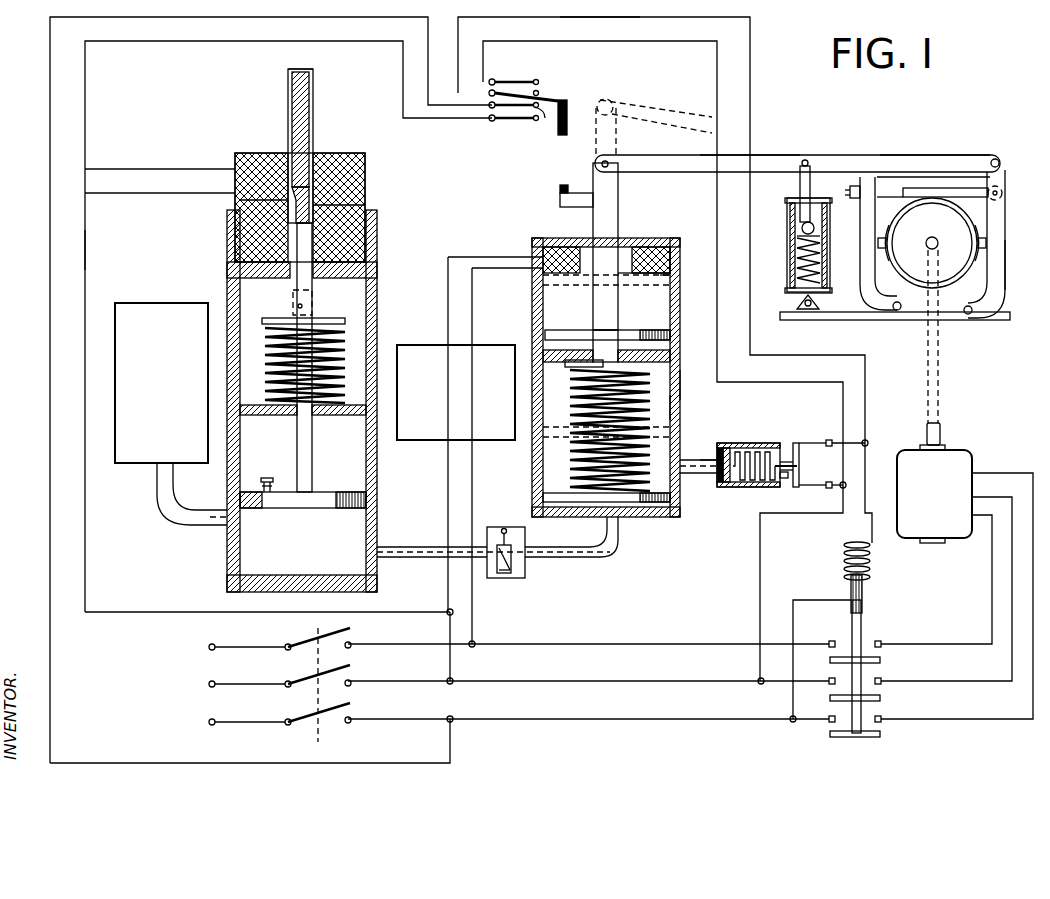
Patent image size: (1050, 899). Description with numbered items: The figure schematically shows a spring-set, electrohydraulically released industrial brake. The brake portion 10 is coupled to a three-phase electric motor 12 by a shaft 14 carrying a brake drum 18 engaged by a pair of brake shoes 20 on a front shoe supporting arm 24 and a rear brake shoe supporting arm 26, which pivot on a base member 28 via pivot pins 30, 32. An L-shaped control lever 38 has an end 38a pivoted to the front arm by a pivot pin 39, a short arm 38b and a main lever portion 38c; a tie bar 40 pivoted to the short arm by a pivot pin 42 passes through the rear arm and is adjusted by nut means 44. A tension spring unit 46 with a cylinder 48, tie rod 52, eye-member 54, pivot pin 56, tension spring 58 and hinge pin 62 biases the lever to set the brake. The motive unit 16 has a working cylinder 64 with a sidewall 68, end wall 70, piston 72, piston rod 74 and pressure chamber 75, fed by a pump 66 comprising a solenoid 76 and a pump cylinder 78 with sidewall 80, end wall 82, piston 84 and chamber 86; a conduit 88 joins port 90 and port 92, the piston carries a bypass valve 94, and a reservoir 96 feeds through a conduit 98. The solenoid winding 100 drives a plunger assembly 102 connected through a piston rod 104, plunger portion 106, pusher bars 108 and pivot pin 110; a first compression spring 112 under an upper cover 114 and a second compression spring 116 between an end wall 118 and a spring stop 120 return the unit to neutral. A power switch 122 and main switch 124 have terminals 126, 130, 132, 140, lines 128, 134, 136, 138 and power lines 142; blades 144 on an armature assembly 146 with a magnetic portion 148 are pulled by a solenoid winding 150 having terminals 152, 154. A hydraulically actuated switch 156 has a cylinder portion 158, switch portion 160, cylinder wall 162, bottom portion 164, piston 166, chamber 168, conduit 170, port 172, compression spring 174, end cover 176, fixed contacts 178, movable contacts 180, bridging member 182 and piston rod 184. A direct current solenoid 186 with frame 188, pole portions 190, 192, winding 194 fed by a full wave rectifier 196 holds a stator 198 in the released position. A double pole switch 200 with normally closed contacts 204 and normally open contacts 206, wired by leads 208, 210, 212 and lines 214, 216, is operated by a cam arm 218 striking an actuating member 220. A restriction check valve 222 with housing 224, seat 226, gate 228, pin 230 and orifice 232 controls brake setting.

The brake portion 10 is at (860, 128).
The three-phase electric motor 12 is at (953, 527).
The shaft 14 is at (942, 432).
The electrofluid motive unit 16 is at (462, 161).
The brake drum 18 is at (940, 265).
The brake shoes 20 is at (975, 228).
The front shoe supporting arm 24 is at (1006, 272).
The rear brake shoe supporting arm 26 is at (861, 258).
The base member 28 is at (1008, 315).
The pivot pin 30 is at (968, 321).
The pivot pin 32 is at (900, 321).
The main control rod member or lever 38 is at (690, 156).
The end of main lever 38a is at (978, 155).
The short arm 38b is at (1001, 207).
The main lever portion 38c is at (768, 155).
The pivot pin 39 is at (998, 157).
The tie bar 40 is at (928, 188).
The pivot pin 42 is at (1002, 190).
The nut means 44 is at (852, 186).
The tension spring unit 46 is at (785, 274).
The cylinder 48 is at (788, 290).
The tie rod 52 is at (800, 185).
The eye-member 54 is at (802, 228).
The pivot pin 56 is at (806, 158).
The tension spring 58 is at (795, 250).
The hinge pin 62 is at (797, 305).
The working fluid cylinder 64 is at (682, 384).
The electrically operated fluid pump 66 is at (233, 157).
The cylindrical sidewall 68 is at (681, 405).
The end wall 70 is at (644, 518).
The piston 72 is at (650, 493).
The piston rod 74 is at (619, 200).
The expandable pressure chamber 75 is at (648, 517).
The electrical solenoid 76 is at (226, 200).
The pump cylinder 78 is at (225, 548).
The cylindrical sidewall 80 is at (232, 562).
The end wall 82 is at (285, 592).
The piston 84 is at (318, 512).
The expandable hydraulic chamber 86 is at (327, 551).
The conduit 88 is at (597, 557).
The port 90 is at (369, 552).
The port 92 is at (612, 527).
The check or bypass valve 94 is at (274, 485).
The fluid reservoir 96 is at (155, 303).
The conduit 98 is at (157, 490).
The alternating current winding 100 is at (272, 153).
The plunger assembly 102 is at (286, 96).
The piston rod 104 is at (297, 432).
The plunger portion 106 is at (295, 69).
The pusher bars 108 is at (265, 200).
The pivot pin 110 is at (292, 303).
The first compression spring 112 is at (673, 358).
The upper cover 114 is at (673, 335).
The second compression spring 116 is at (268, 372).
The upper cover or end wall 118 is at (258, 398).
The spring stop 120 is at (303, 341).
The power switch 122 is at (864, 638).
The main control switch 124 is at (318, 730).
The first set of terminals 126 is at (881, 645).
The lines 128 is at (950, 644).
The second set of terminals 130 is at (830, 640).
The terminals 132 is at (351, 648).
The line 134 is at (580, 646).
The line 136 is at (580, 683).
The line 138 is at (583, 721).
The second set of terminals 140 is at (288, 640).
The three-phase alternating current power lines 142 is at (220, 640).
The switch blades 144 is at (880, 660).
The armature assembly 146 is at (862, 622).
The magnetically attractive portion 148 is at (862, 605).
The solenoid winding 150 is at (845, 552).
The first terminal 152 is at (793, 722).
The second terminal 154 is at (868, 443).
The hydraulically actuated switch 156 is at (742, 490).
The hydraulic cylinder portion 158 is at (742, 444).
The switch portion 160 is at (815, 441).
The cylinder wall 162 is at (742, 443).
The bottom portion 164 is at (717, 455).
The piston 166 is at (725, 488).
The expandable chamber 168 is at (721, 485).
The conduit 170 is at (713, 474).
The port 172 is at (665, 493).
The compression spring 174 is at (778, 460).
The end cover 176 is at (789, 475).
The fixed contacts 178 is at (832, 443).
The movable contacts 180 is at (802, 440).
The bridging member 182 is at (800, 455).
The piston rod 184 is at (784, 462).
The direct current solenoid 186 is at (660, 237).
The annular frame 188 is at (678, 247).
The pole portion 190 is at (672, 275).
The pole portion 192 is at (630, 282).
The ring-shaped winding 194 is at (675, 262).
The full wave rectifier 196 is at (430, 345).
The stator 198 is at (575, 330).
The double pole switch 200 is at (566, 95).
The normally closed contacts 204 is at (537, 118).
The normally open contacts 206 is at (538, 82).
The lead 208 is at (51, 272).
The lead 210 is at (85, 250).
The lead 212 is at (220, 41).
The line 214 is at (518, 41).
The line 216 is at (588, 17).
The cam arm 218 is at (562, 185).
The switch actuating member 220 is at (567, 135).
The restriction check valve 222 is at (500, 580).
The valve housing 224 is at (489, 543).
The valve seat 226 is at (487, 530).
The valve gate 228 is at (508, 577).
The pin 230 is at (507, 531).
The orifice 232 is at (518, 566).